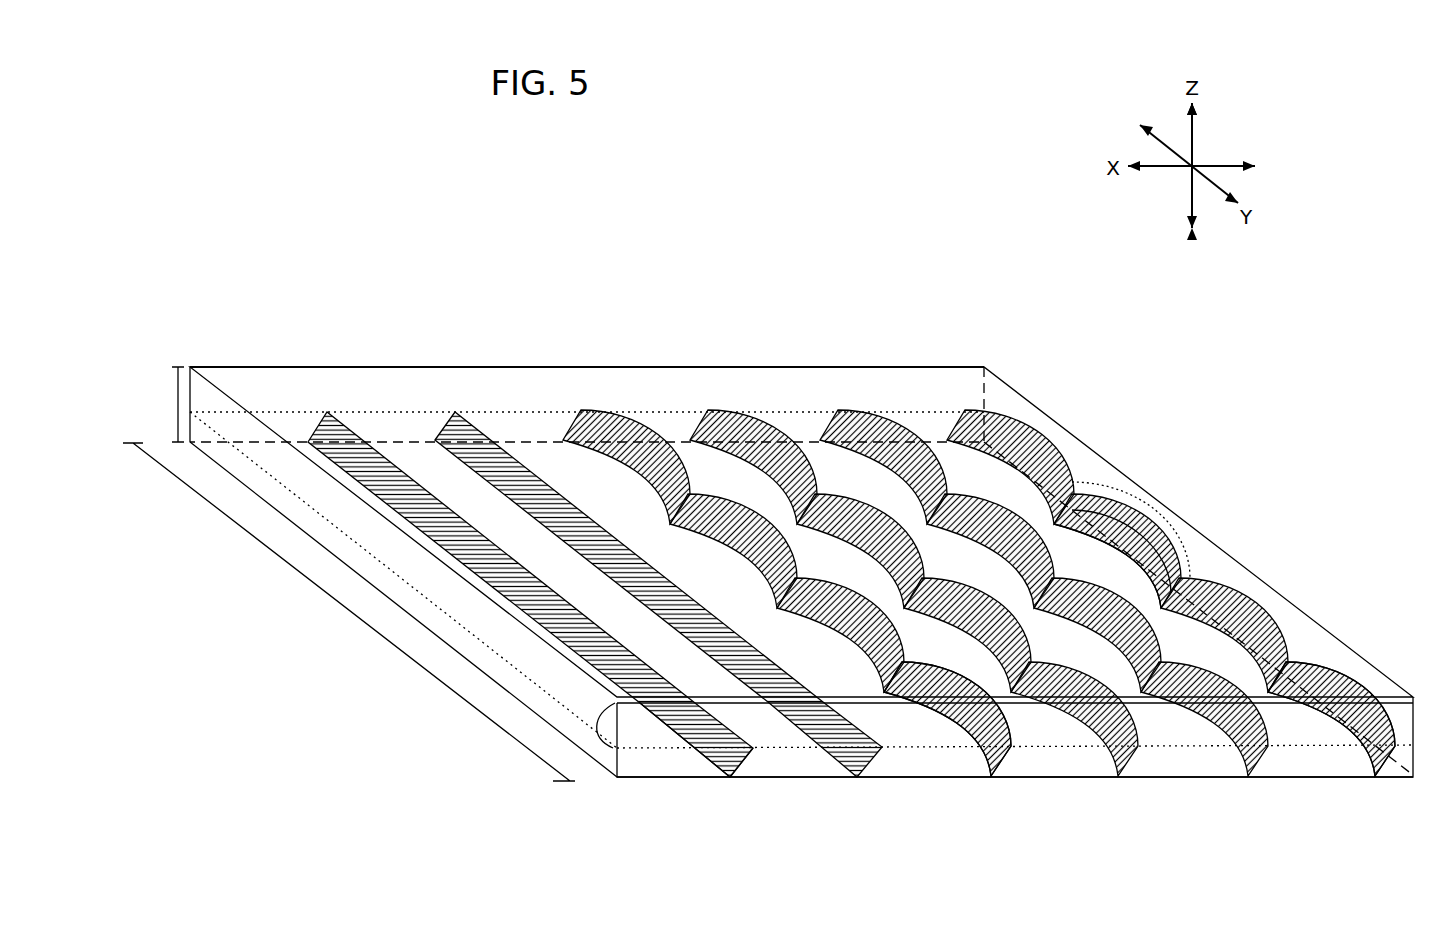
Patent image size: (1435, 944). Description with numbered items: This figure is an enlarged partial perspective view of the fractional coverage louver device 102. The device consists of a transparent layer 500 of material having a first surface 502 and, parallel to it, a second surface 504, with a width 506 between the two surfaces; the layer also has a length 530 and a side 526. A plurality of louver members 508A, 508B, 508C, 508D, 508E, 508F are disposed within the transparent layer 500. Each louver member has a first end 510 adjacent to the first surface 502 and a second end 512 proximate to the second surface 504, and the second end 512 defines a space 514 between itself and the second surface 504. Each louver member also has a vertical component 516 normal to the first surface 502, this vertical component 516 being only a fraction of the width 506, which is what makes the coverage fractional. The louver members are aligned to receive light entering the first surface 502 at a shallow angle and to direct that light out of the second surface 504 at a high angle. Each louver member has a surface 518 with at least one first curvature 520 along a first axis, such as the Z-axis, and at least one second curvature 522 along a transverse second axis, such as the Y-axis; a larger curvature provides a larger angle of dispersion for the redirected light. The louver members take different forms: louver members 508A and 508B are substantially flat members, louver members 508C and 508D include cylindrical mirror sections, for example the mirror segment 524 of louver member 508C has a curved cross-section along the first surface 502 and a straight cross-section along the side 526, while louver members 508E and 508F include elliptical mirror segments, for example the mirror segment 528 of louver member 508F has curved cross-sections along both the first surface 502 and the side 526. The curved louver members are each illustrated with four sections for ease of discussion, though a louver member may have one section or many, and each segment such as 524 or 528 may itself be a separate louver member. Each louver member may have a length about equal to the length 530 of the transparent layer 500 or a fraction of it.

The fractional coverage louver device 102 is at (512, 262).
The transparent layer 500 is at (237, 365).
The first surface 502 is at (675, 778).
The second surface 504 is at (312, 385).
The width 506 is at (164, 404).
The louver member 508A is at (408, 488).
The louver member 508B is at (515, 470).
The louver member 508C is at (650, 460).
The louver member 508D is at (768, 445).
The louver member 508E is at (875, 440).
The louver member 508F is at (1030, 450).
The first end 510 is at (735, 778).
The second end 512 is at (753, 749).
The space 514 is at (600, 722).
The vertical component 516 is at (890, 748).
The surface 518 is at (1122, 498).
The first curvature 520 is at (1143, 522).
The second curvature 522 is at (1160, 547).
The mirror segment 524 is at (950, 703).
The side 526 is at (1065, 776).
The mirror segment 528 is at (1345, 705).
The length 530 is at (349, 612).